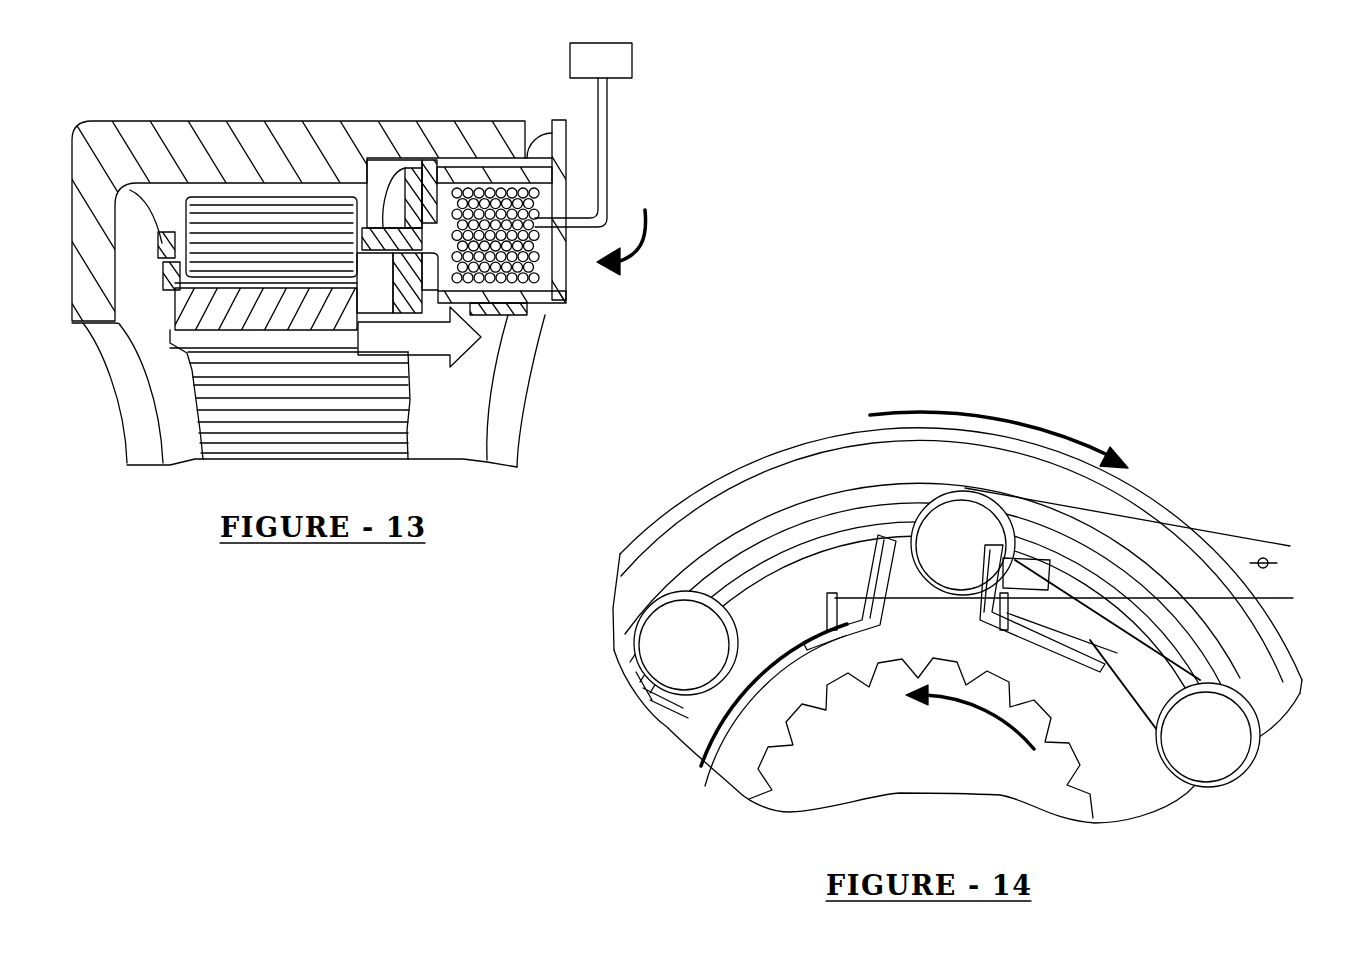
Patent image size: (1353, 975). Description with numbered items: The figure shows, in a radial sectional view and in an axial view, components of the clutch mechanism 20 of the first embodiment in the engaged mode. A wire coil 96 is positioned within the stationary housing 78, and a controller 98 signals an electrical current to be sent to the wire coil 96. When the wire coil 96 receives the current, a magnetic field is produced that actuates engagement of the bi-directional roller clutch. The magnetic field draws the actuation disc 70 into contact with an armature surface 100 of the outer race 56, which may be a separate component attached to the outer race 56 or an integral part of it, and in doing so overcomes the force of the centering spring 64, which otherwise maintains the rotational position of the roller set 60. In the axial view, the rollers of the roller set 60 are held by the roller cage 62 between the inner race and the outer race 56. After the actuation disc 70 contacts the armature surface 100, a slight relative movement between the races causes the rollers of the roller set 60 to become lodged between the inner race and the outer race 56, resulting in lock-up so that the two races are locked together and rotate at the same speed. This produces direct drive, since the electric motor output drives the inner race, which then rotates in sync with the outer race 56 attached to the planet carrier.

In FIG. 13, the clutch mechanism 20 is at (186, 82).
In FIG. 14, the outer race 56 is at (1217, 630).
In FIG. 13, the roller set 60 is at (280, 205).
In FIG. 14, the roller set 60 is at (950, 545).
In FIG. 14, the roller cage 62 is at (797, 567).
In FIG. 14, the centering spring 64 is at (815, 735).
In FIG. 13, the actuation disc 70 is at (407, 217).
In FIG. 13, the stationary housing 78 is at (552, 315).
In FIG. 13, the wire coil 96 is at (517, 262).
In FIG. 13, the controller 98 is at (632, 60).
In FIG. 13, the armature surface 100 is at (442, 180).